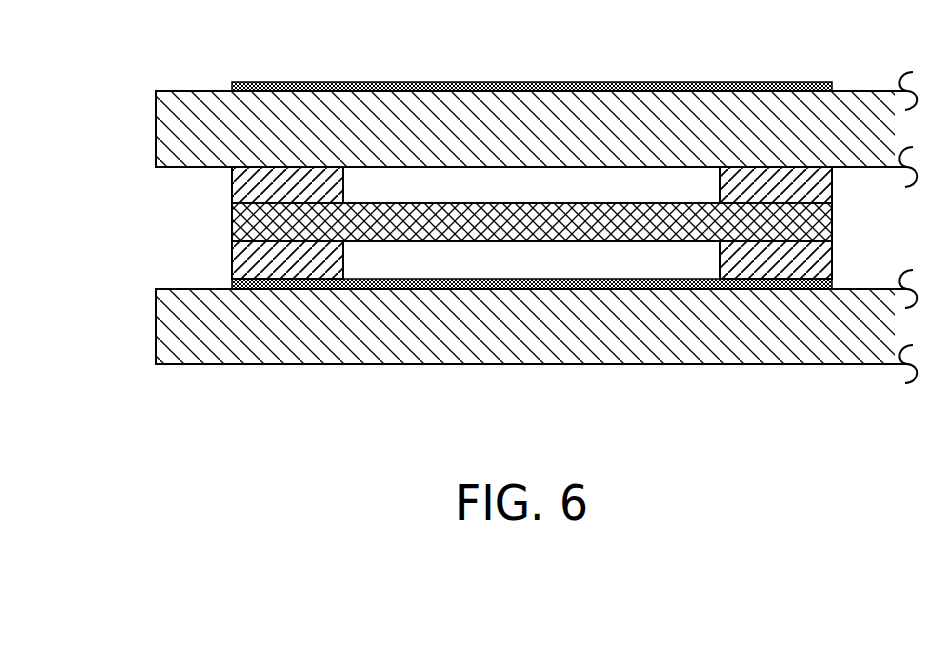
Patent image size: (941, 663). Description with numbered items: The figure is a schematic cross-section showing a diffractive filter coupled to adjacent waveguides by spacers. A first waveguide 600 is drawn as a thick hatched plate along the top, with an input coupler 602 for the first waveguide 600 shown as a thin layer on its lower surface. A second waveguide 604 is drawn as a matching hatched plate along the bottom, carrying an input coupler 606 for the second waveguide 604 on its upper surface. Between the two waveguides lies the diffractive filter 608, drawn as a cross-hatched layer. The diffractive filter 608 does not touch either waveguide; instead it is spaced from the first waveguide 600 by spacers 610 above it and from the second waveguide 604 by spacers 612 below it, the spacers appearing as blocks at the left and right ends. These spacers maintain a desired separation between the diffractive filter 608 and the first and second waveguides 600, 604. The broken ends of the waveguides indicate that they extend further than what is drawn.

The first waveguide 600 is at (156, 127).
The input coupler 602 is at (832, 90).
The second waveguide 604 is at (156, 323).
The input coupler 606 is at (232, 288).
The diffractive filter 608 is at (818, 230).
The spacers 610 is at (815, 192).
The spacers 612 is at (815, 268).